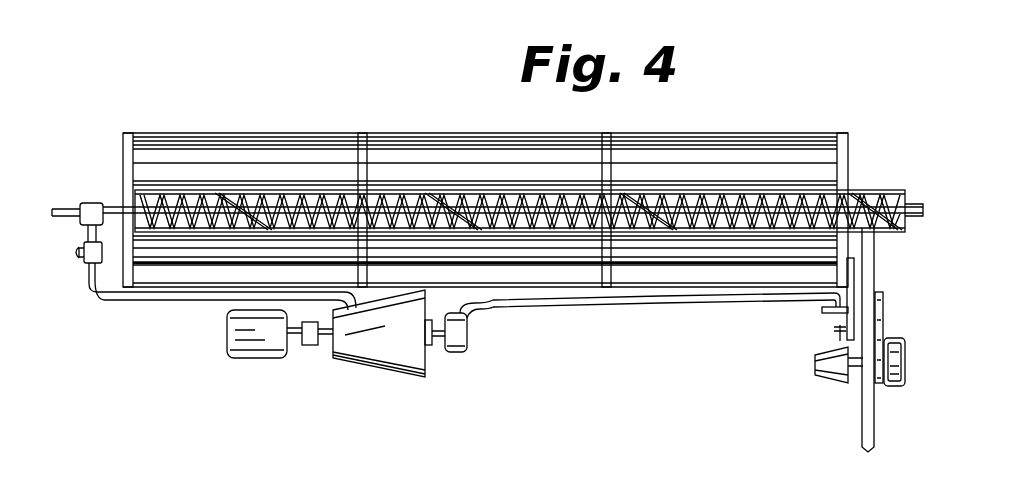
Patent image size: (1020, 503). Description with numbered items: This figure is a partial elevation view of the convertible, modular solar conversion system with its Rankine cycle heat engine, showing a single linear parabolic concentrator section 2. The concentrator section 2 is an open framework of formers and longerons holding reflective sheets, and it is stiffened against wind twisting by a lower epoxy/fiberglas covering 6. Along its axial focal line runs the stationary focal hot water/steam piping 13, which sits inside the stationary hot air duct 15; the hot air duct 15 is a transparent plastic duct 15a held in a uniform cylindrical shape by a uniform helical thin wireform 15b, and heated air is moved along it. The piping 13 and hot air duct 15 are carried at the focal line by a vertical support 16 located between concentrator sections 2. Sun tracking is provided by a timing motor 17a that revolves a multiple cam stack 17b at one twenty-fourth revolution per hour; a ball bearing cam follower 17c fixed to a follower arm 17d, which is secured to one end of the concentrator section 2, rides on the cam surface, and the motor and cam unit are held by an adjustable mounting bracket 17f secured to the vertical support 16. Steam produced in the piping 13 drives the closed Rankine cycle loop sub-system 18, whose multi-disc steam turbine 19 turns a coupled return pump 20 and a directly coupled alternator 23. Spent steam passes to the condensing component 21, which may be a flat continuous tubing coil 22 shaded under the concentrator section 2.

The linear parabolic concentrator section 2 is at (197, 142).
The lower epoxy/fiberglas covering 6 is at (475, 283).
The focal hot water/steam piping 13 is at (48, 213).
The hot air duct 15 is at (481, 170).
The transparent plastic duct 15a is at (691, 172).
The helical thin wireform 15b is at (342, 172).
The vertical support 16 is at (871, 247).
The timing motor 17a is at (893, 386).
The multiple cam stack 17b is at (836, 381).
The ball bearing cam follower 17c is at (833, 340).
The follower arm 17d is at (843, 323).
The adjustable mounting bracket 17f is at (884, 303).
The closed Rankine cycle loop sub-system 18 is at (152, 300).
The multi-disc steam turbine 19 is at (380, 355).
The return pump 20 is at (455, 352).
The condensing component 21 is at (614, 293).
The continuous tubing coil 22 is at (695, 305).
The alternator 23 is at (259, 348).